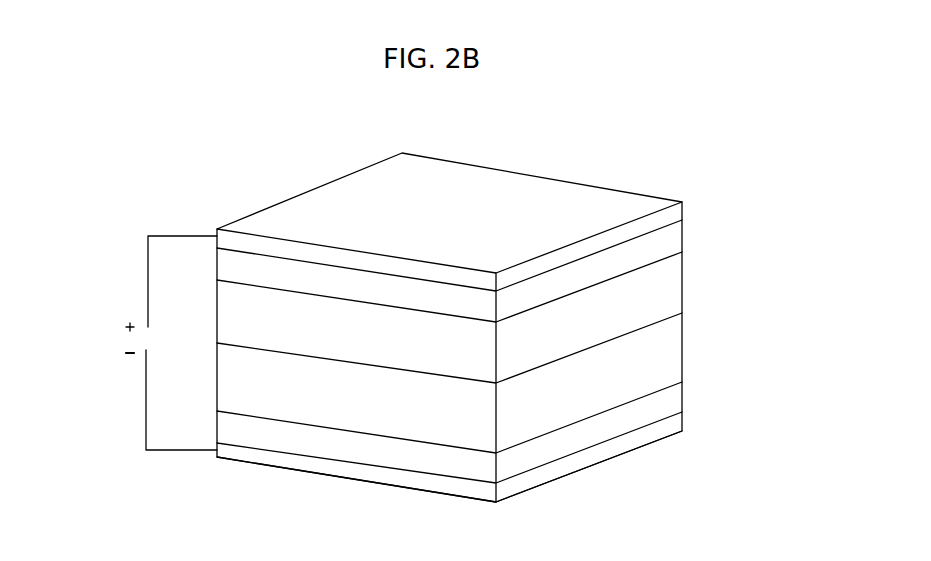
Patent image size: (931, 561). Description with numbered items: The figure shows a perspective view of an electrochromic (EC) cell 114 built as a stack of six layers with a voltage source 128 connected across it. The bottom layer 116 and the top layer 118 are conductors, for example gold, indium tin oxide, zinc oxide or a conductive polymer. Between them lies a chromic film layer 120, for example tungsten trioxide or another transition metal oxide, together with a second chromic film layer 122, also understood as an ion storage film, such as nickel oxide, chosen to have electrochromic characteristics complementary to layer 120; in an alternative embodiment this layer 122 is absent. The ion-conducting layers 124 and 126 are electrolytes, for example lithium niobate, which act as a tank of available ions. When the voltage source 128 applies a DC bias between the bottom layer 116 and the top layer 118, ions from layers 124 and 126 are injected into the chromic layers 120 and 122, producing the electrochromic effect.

The electrochromic cell 114 is at (458, 266).
The bottom layer 116 is at (676, 425).
The top layer 118 is at (676, 210).
The chromic film layer 120 is at (676, 339).
The ion storage film layer 122 is at (683, 293).
The ion-conducting layer 124 is at (671, 398).
The ion-conducting layer 126 is at (683, 239).
The voltage source 128 is at (120, 336).